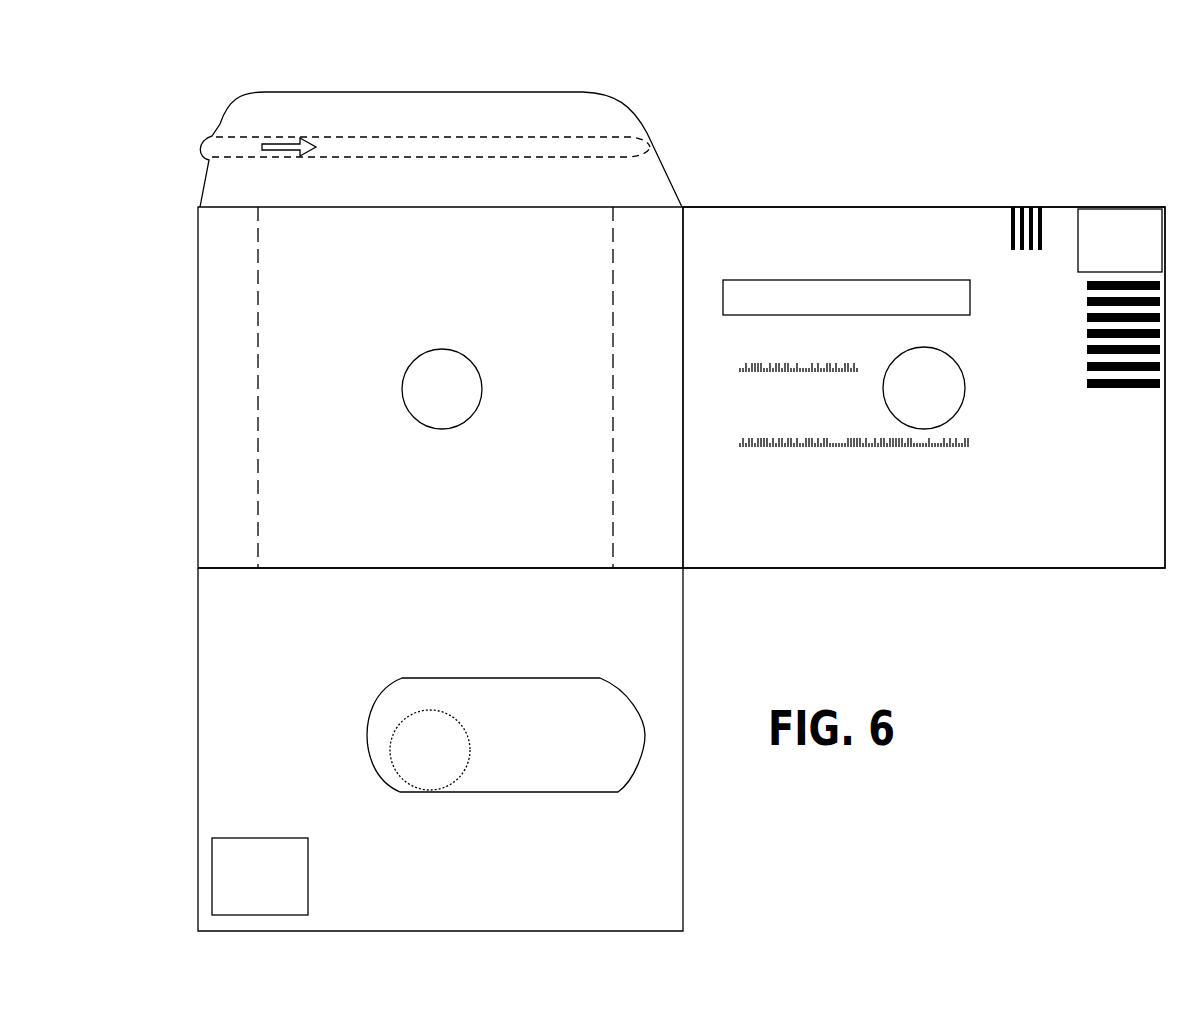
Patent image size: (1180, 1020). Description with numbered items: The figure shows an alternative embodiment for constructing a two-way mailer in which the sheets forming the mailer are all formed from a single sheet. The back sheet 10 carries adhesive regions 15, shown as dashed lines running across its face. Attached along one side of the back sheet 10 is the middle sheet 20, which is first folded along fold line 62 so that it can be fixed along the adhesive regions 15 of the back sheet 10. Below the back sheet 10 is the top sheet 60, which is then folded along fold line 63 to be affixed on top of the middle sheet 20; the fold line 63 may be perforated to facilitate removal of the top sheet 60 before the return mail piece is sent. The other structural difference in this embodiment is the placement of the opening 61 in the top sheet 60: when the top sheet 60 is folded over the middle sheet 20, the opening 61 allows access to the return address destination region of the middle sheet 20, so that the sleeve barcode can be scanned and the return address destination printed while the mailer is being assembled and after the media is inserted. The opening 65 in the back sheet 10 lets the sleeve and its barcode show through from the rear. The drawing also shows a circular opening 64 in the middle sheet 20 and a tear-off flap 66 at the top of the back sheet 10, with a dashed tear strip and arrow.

The back sheet 10 is at (277, 265).
The adhesive regions 15 is at (220, 320).
The middle sheet 20 is at (926, 548).
The top sheet 60 is at (658, 633).
The opening 61 is at (500, 678).
The fold line 62 is at (682, 207).
The fold line 63 is at (252, 567).
The finger hole 64 is at (963, 386).
The opening 65 is at (482, 392).
The tear-off flap 66 is at (473, 97).